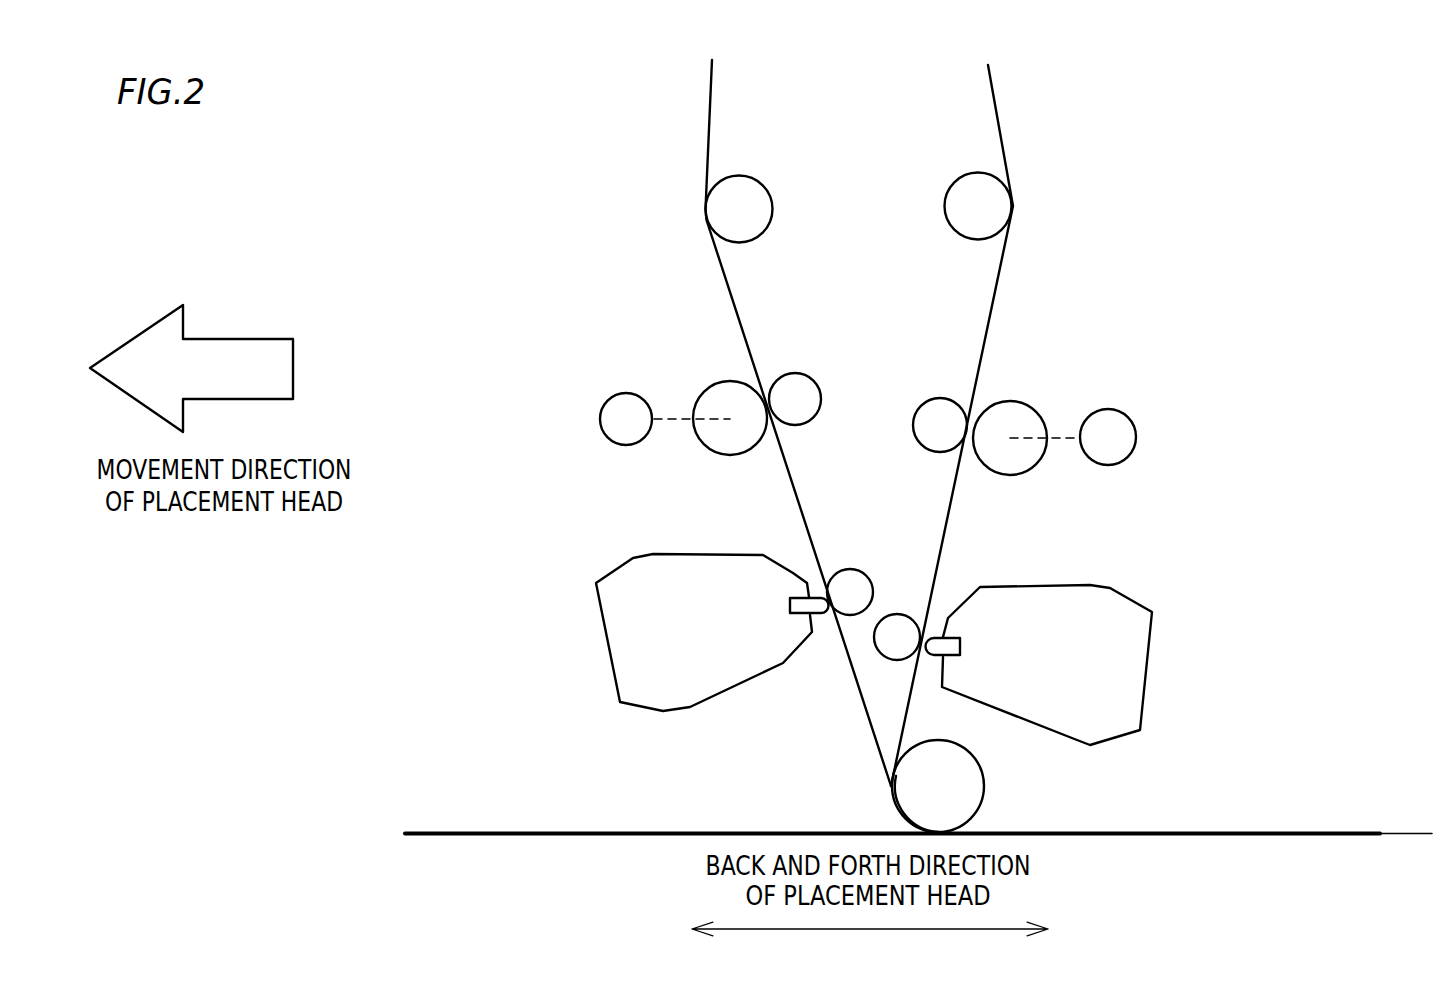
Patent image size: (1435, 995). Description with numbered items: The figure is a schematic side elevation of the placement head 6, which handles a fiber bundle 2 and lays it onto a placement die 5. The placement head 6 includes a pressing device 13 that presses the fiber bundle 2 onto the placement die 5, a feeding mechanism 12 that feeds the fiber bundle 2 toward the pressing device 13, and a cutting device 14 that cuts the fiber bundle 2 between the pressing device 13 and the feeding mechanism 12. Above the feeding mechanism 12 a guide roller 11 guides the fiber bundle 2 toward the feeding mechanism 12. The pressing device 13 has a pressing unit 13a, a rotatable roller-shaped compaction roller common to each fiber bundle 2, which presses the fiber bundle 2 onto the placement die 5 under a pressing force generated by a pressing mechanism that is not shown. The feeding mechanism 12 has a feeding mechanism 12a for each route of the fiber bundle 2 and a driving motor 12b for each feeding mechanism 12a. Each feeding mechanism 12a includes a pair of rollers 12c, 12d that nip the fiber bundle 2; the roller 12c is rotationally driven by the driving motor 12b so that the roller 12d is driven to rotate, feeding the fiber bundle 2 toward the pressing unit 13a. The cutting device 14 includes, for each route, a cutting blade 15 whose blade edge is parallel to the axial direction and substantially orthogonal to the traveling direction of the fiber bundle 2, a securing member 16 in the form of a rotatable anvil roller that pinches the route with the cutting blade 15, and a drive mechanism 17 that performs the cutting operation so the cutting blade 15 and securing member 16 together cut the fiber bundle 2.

The fiber bundle 2 is at (720, 267).
The placement die 5 is at (489, 832).
The placement head 6 is at (1197, 214).
The guide roller 11 is at (755, 193).
The feeding mechanism 12 is at (1181, 406).
The feeding mechanism 12a is at (669, 453).
The driving motor 12b is at (620, 391).
The roller 12c is at (728, 385).
The roller 12d is at (794, 374).
The pressing device 13 is at (1018, 769).
The pressing unit 13a is at (970, 794).
The cutting device 14 is at (1214, 595).
The cutting blade 15 is at (806, 597).
The securing member 16 is at (847, 578).
The drive mechanism 17 is at (593, 560).